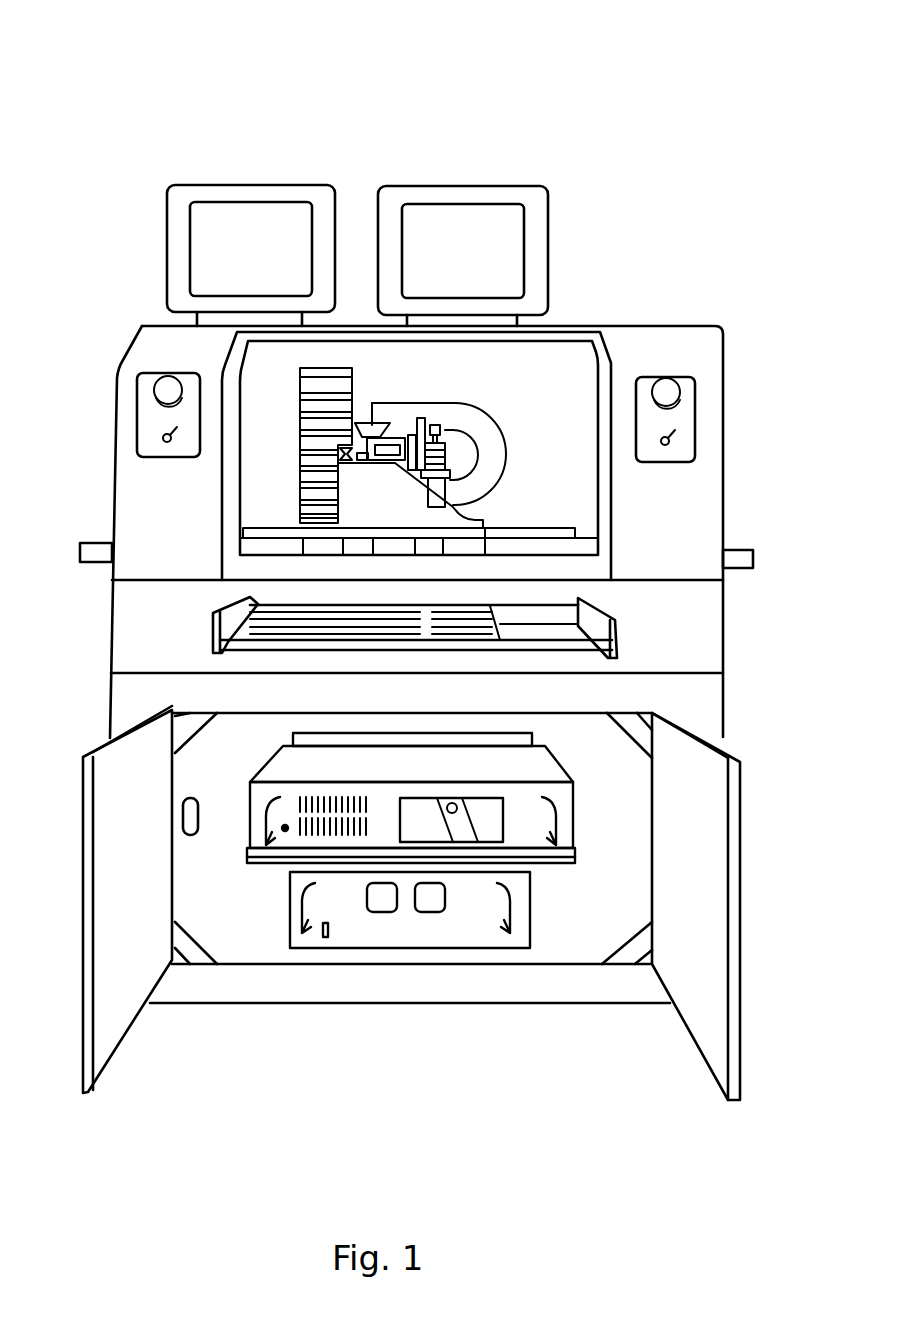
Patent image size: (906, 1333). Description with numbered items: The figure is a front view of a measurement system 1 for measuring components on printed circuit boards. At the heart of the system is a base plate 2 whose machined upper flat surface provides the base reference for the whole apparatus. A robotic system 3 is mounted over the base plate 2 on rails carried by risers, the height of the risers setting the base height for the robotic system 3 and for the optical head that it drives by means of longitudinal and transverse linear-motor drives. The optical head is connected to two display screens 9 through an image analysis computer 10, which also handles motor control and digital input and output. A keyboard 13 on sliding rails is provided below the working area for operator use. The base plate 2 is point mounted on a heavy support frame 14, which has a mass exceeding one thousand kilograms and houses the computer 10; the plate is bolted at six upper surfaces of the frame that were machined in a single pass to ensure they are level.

The measurement system 1 is at (118, 103).
The base plate 2 is at (273, 533).
The robotic system 3 is at (524, 449).
The display screens 9 is at (310, 185).
The image analysis computer 10 is at (542, 863).
The keyboard 13 is at (617, 650).
The support frame 14 is at (740, 707).